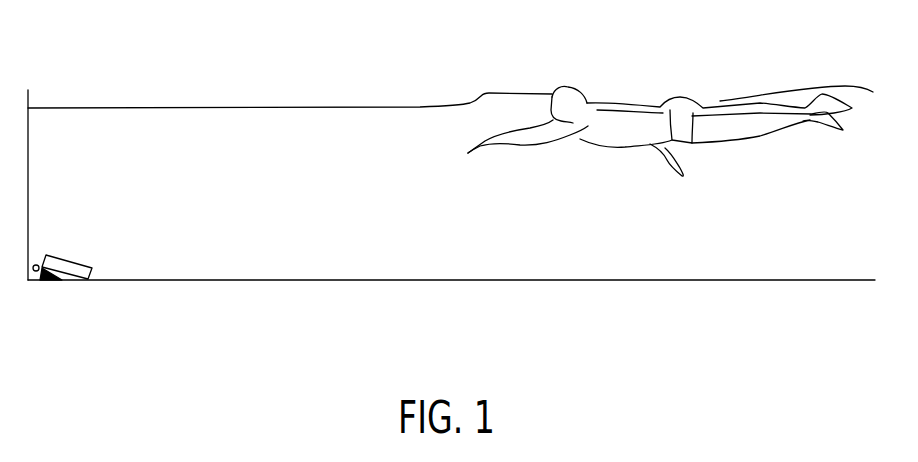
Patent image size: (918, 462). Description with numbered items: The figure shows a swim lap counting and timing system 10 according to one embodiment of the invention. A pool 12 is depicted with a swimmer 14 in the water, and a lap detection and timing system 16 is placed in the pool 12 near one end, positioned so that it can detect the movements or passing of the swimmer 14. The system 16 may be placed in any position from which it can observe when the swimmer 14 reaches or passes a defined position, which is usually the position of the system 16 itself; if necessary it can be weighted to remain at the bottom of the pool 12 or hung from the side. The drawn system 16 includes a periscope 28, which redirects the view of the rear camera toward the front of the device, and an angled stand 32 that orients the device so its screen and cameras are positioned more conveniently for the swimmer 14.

The system 10 is at (312, 86).
The pool 12 is at (30, 172).
The swimmer 14 is at (618, 138).
The lap detection and timing system 16 is at (80, 260).
The periscope 28 is at (38, 266).
The angled stand 32 is at (55, 282).